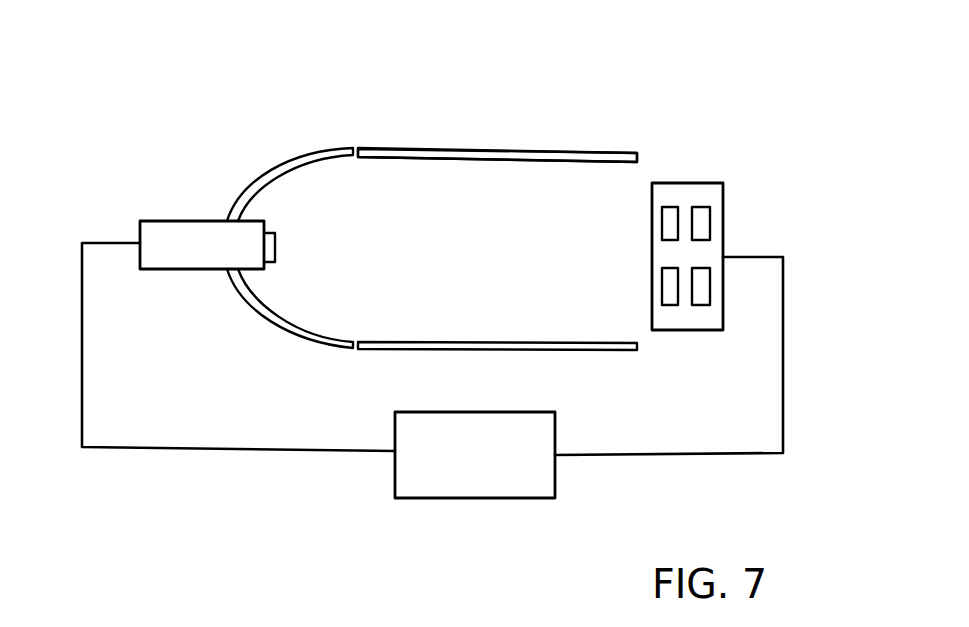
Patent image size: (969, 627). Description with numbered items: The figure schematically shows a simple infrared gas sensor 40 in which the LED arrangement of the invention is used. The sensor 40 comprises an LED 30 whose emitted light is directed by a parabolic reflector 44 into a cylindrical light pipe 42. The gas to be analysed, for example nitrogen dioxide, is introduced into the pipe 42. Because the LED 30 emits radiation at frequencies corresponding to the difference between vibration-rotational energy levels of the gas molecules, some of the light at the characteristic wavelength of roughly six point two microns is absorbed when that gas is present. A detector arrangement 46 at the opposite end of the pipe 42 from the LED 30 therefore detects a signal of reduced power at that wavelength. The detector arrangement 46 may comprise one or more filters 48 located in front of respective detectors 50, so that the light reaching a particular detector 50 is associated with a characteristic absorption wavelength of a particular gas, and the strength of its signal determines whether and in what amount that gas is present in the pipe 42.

The LED 30 is at (277, 245).
The infrared gas sensor 40 is at (590, 120).
The cylindrical light pipe 42 is at (468, 148).
The parabolic reflector 44 is at (267, 177).
The detector arrangement 46 is at (743, 192).
The filters 48 is at (670, 217).
The detectors 50 is at (702, 285).